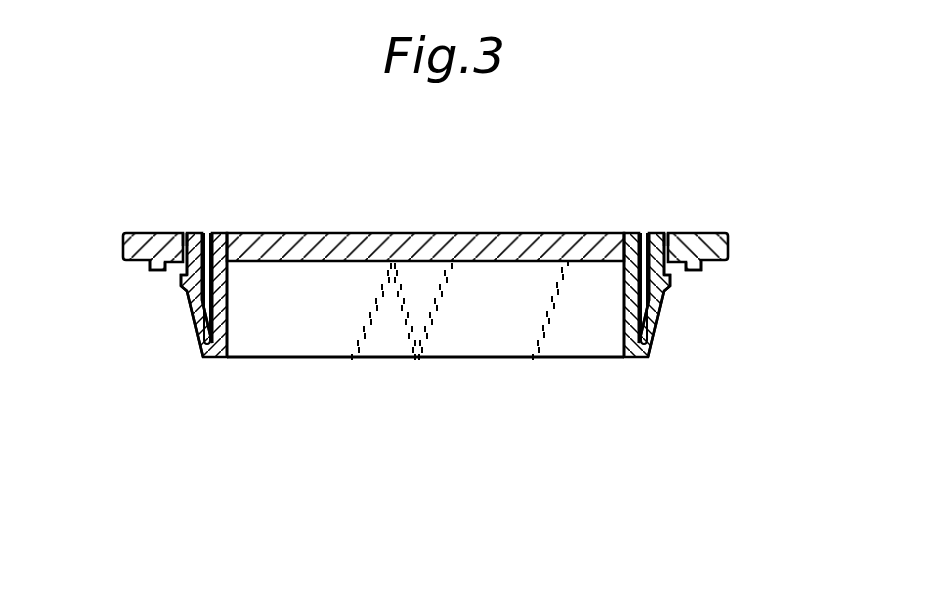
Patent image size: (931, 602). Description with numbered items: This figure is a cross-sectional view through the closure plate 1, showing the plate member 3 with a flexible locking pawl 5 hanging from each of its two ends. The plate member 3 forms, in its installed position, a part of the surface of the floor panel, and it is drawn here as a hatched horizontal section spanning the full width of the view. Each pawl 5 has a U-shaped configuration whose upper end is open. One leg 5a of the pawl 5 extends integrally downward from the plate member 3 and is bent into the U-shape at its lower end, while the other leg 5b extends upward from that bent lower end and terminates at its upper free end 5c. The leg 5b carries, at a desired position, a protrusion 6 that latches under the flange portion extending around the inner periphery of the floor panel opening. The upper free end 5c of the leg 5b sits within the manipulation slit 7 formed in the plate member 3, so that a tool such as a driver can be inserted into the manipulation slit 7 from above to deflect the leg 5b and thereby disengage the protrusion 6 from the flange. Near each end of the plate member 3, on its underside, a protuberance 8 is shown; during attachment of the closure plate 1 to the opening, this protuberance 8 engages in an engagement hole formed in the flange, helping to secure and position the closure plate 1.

The closure plate 1 is at (518, 233).
The plate member 3 is at (354, 232).
The flexible locking pawl 5 is at (428, 291).
The leg 5a is at (224, 303).
The leg 5b is at (193, 310).
The upper free end 5c is at (200, 233).
The protrusion 6 is at (182, 287).
The manipulation slit 7 is at (185, 238).
The protuberance 8 is at (158, 262).